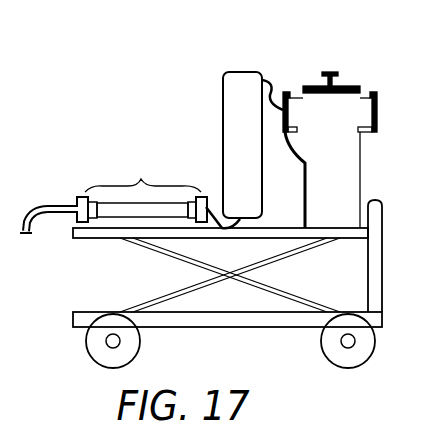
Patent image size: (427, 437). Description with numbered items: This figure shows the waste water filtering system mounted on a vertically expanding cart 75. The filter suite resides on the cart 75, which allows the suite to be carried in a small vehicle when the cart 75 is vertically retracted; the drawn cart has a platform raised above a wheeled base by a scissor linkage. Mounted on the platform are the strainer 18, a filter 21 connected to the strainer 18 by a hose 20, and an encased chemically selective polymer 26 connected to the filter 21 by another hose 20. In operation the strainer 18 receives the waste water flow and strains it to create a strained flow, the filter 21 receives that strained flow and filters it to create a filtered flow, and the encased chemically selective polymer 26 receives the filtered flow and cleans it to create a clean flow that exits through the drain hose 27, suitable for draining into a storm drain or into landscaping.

The strainer 18 is at (339, 131).
The hose 20 is at (271, 78).
The filter 21 is at (253, 158).
The encased chemically selective polymer 26 is at (140, 180).
The drain hose 27 is at (45, 205).
The vertically expanding cart 75 is at (255, 318).